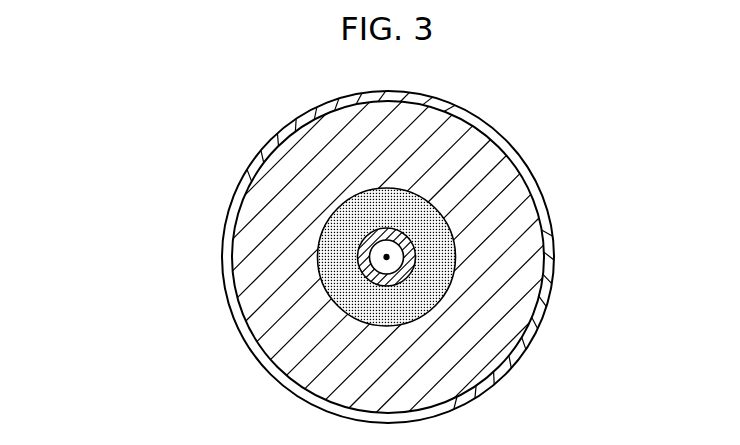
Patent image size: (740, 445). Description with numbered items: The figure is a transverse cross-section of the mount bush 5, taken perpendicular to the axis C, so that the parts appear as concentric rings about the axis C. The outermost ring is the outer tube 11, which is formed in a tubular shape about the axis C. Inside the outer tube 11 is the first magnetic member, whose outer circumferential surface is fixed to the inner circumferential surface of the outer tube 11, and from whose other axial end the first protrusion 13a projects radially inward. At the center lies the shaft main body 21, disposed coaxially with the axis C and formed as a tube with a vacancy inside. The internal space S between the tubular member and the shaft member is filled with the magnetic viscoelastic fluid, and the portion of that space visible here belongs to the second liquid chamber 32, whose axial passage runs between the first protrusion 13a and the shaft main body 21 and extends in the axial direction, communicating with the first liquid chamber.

The mount bush 5 is at (528, 126).
The outer tube 11 is at (268, 139).
The first protrusion 13a is at (243, 245).
The second liquid chamber 32 is at (410, 206).
The shaft main body 21 is at (403, 238).
The internal space S is at (353, 236).
The axis C is at (390, 257).